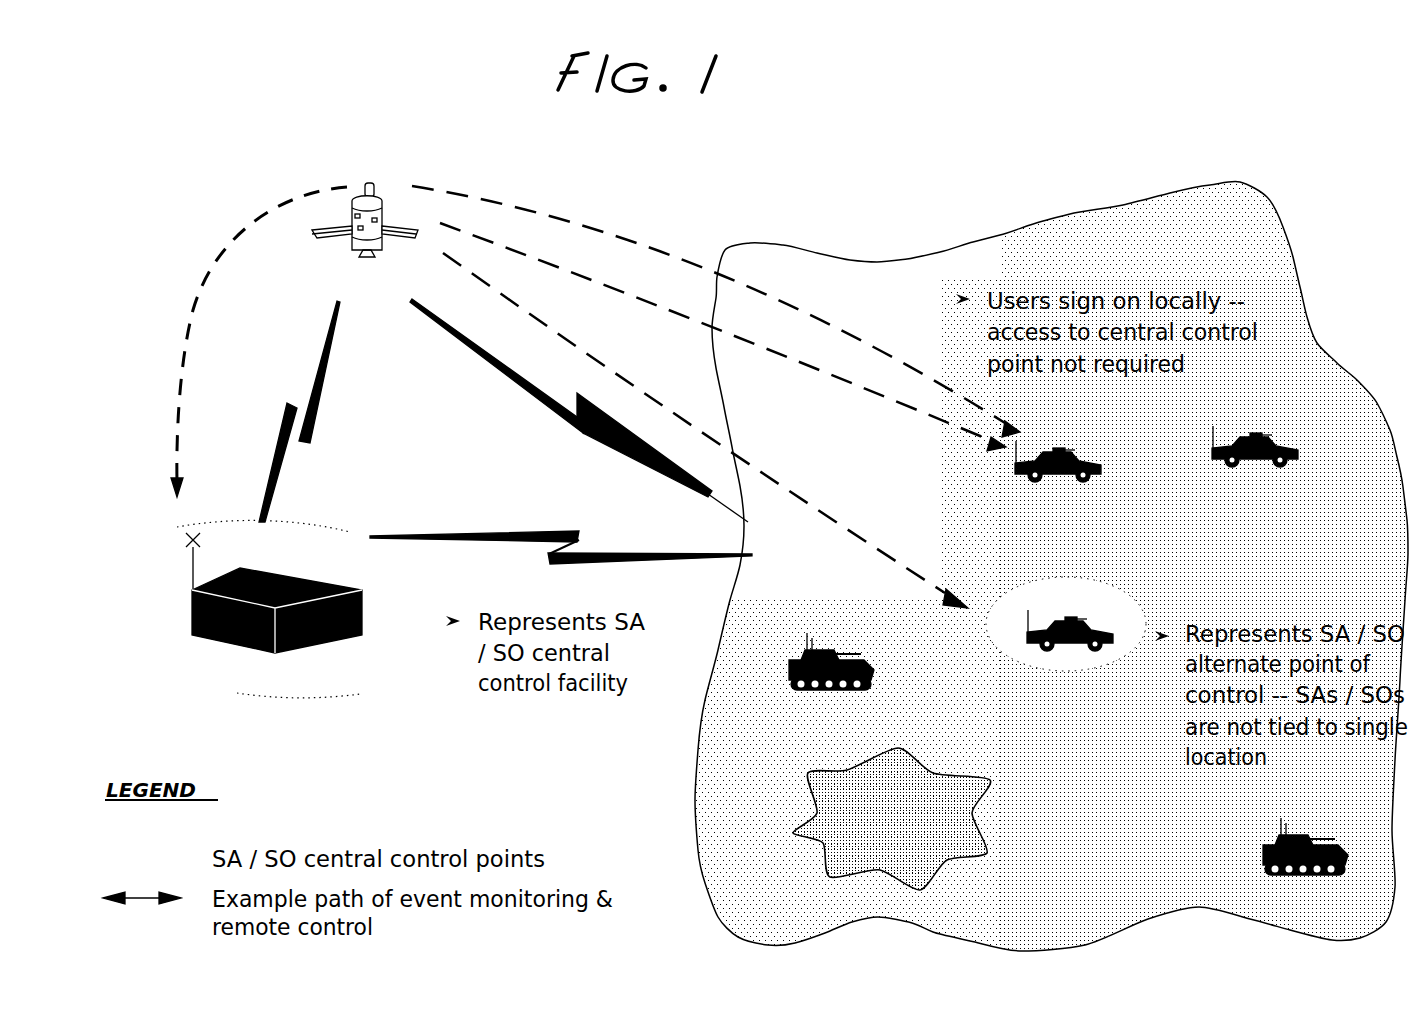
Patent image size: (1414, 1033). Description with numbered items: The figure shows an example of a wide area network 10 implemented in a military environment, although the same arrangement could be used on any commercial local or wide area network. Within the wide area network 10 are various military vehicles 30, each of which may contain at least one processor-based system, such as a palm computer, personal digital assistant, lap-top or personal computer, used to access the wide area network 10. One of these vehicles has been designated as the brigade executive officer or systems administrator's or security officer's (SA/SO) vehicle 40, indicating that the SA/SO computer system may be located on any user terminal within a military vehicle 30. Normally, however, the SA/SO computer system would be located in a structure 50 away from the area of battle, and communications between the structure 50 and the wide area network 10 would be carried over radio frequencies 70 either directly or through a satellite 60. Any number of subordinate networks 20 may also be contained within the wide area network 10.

The wide area network 10 is at (1002, 235).
The subordinate network 20 is at (962, 776).
The military vehicle 30 is at (1087, 452).
The brigade executive officer (Bde XO) vehicle or systems administrator's or securit 40 is at (1100, 591).
The structure 50 is at (233, 663).
The satellite 60 is at (348, 247).
The radio frequencies 70 is at (638, 238).